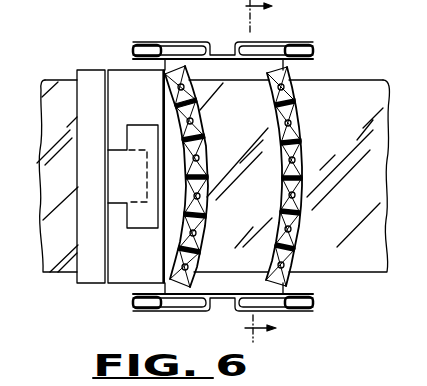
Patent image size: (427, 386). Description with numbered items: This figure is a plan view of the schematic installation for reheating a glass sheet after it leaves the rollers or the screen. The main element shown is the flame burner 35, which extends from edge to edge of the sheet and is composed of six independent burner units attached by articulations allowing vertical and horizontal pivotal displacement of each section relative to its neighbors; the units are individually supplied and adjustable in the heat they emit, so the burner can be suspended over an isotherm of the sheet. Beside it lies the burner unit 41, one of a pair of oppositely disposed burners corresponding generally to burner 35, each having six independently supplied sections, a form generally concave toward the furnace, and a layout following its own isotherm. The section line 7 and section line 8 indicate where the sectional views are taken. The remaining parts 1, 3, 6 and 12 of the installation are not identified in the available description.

The housing body 1 is at (368, 85).
The side plate 3 is at (93, 284).
The mounting frame 6 is at (122, 76).
The section line 7 is at (96, 173).
The section line 8 is at (142, 135).
The clamping channel strip 12 is at (218, 44).
The flame burner 35 is at (205, 158).
The burner unit 41 is at (300, 135).